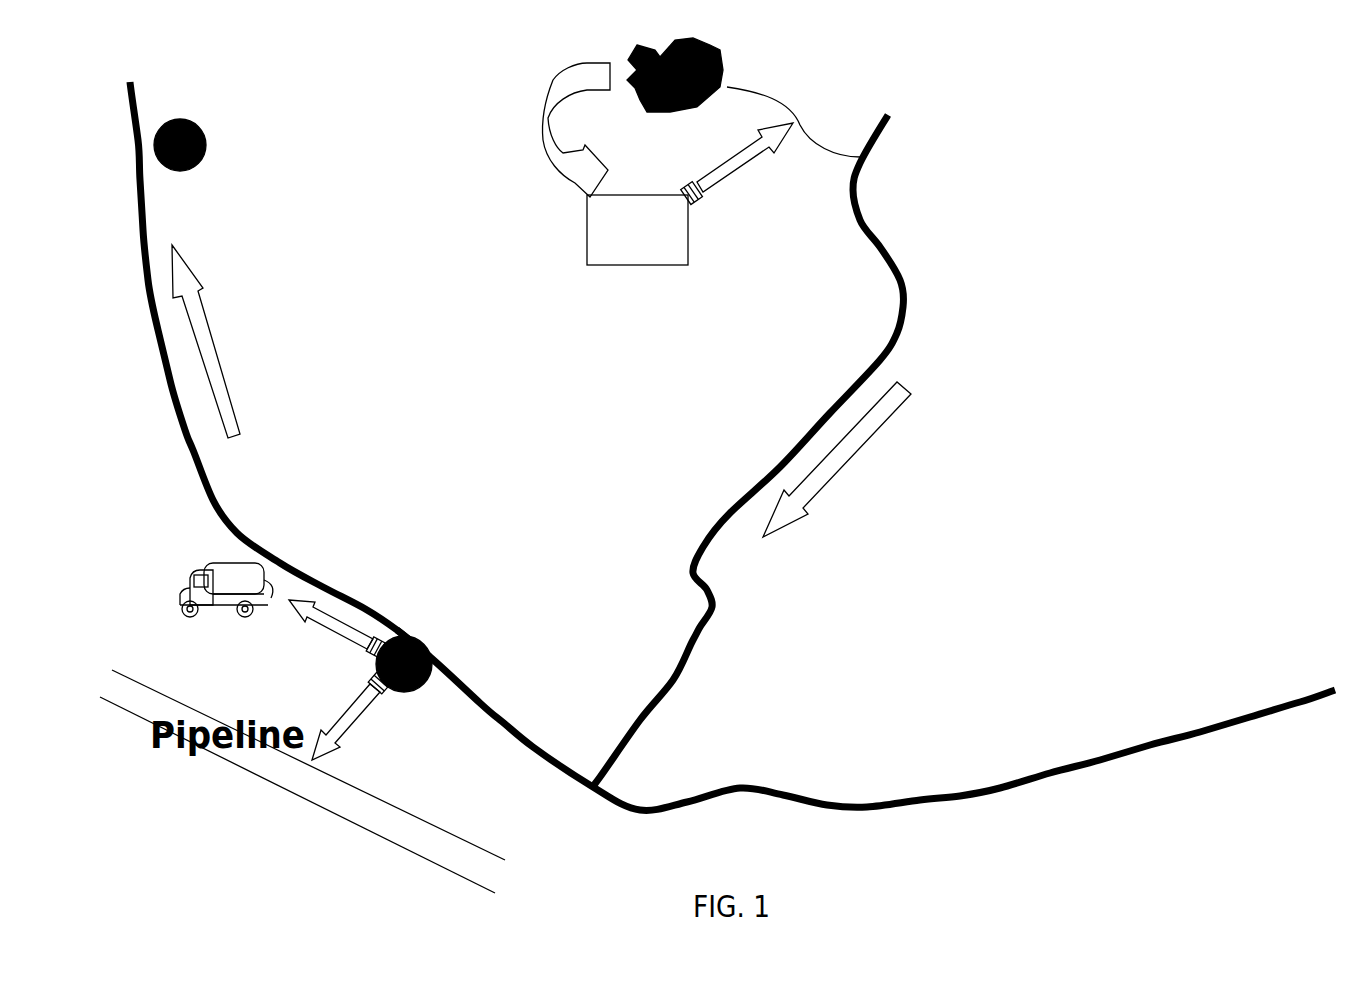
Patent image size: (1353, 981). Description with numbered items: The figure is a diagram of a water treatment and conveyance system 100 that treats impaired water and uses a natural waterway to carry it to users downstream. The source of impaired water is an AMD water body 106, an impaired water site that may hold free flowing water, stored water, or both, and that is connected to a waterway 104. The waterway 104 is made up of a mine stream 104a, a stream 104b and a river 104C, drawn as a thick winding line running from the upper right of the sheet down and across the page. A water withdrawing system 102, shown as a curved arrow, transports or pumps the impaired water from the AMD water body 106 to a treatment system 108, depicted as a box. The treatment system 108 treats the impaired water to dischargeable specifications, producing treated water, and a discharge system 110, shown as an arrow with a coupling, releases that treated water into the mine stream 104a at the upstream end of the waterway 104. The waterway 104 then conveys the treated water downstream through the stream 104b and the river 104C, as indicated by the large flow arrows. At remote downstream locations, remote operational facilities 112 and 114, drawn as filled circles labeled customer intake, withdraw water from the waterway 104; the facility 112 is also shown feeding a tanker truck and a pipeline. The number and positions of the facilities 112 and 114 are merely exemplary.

The water treatment and conveyance system 100 is at (1137, 122).
The water withdrawing system 102 is at (547, 92).
The waterway 104 is at (571, 369).
The mine stream 104a is at (810, 137).
The stream 104b is at (880, 243).
The river 104C is at (533, 748).
The AMD water body 106 is at (713, 77).
The treatment system 108 is at (587, 265).
The discharge system 110 is at (770, 200).
The remote operational facility 112 is at (413, 635).
The remote operational facility 114 is at (207, 150).